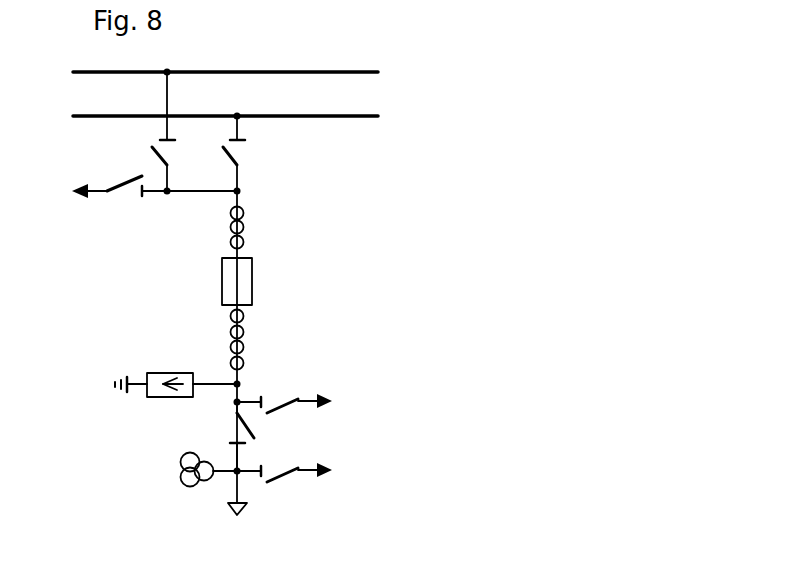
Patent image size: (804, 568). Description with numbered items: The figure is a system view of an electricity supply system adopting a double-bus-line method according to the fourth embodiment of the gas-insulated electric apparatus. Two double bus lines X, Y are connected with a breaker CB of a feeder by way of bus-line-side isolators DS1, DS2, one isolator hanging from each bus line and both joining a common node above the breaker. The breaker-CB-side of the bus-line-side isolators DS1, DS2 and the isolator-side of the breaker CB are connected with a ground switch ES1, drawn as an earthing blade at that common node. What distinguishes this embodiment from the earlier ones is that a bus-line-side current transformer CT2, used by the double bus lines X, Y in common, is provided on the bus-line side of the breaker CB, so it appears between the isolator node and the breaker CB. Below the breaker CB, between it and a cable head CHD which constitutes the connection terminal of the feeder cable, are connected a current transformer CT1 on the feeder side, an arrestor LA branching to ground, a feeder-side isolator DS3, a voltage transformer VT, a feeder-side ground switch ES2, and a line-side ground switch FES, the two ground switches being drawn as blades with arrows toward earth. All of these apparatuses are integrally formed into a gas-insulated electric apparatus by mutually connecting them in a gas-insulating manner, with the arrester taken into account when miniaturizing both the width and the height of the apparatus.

The bus line X is at (362, 72).
The bus line Y is at (362, 116).
The bus-line-side isolator DS1 is at (157, 151).
The bus-line-side isolator DS2 is at (239, 153).
The feeder-side isolator DS3 is at (234, 430).
The ground switch ES1 is at (97, 190).
The feeder-side ground switch ES2 is at (275, 396).
The line-side ground switch FES is at (275, 465).
The current transformer on a feeder side CT1 is at (250, 313).
The bus-line-side current transformer CT2 is at (250, 205).
The breaker CB is at (248, 272).
The arrestor LA is at (167, 398).
The voltage transformer VT is at (180, 471).
The cable head CHD is at (241, 514).